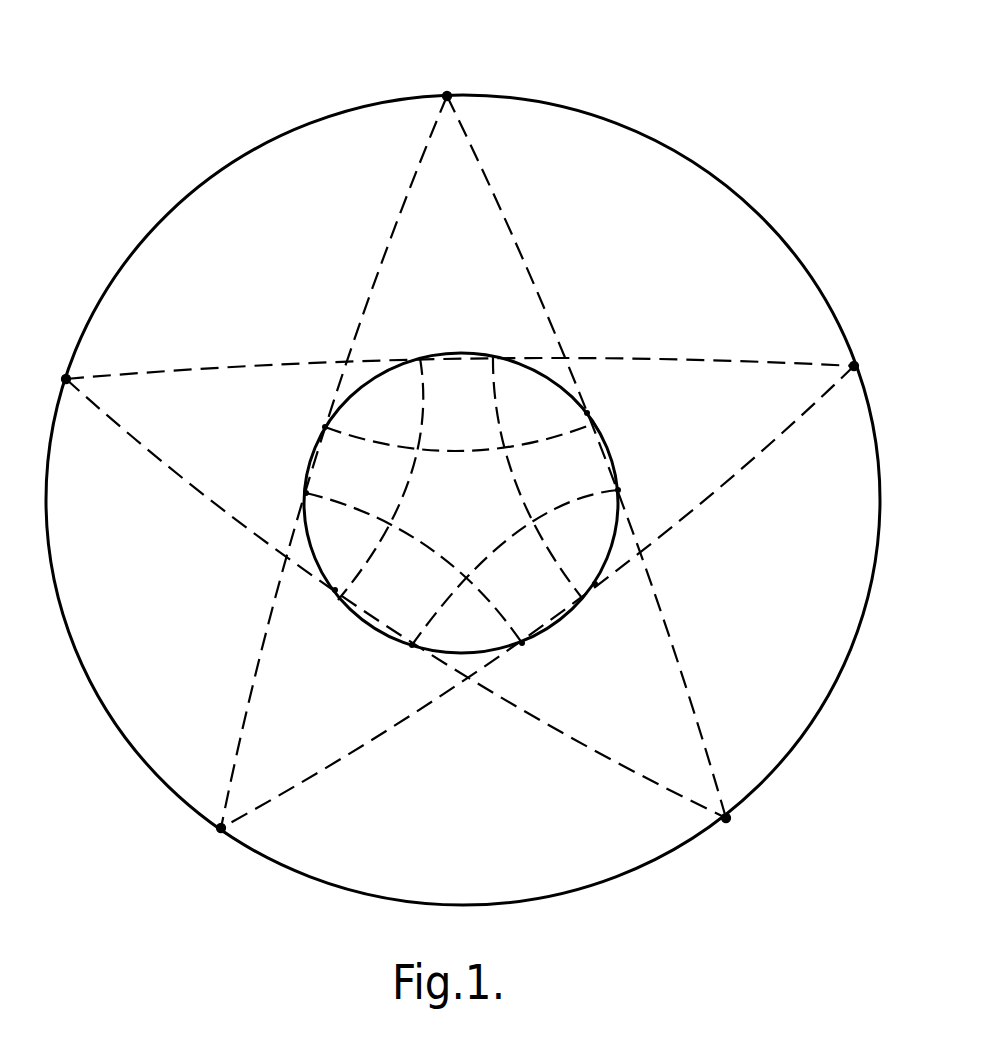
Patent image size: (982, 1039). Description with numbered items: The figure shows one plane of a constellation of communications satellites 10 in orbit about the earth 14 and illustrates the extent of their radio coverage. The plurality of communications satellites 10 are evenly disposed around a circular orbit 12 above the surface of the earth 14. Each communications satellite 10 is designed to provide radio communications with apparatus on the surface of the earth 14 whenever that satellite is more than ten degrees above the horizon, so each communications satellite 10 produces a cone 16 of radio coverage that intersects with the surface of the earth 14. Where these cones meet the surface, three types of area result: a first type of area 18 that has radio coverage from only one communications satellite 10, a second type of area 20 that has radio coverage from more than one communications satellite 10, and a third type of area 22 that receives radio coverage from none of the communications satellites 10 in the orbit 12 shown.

The communications satellites 10 is at (447, 96).
The circular orbit 12 is at (702, 166).
The earth 14 is at (381, 627).
The cone of radio coverage 16 is at (507, 281).
The first type of area 18 is at (462, 364).
The second type of area 20 is at (385, 398).
The third type of area 22 is at (450, 528).